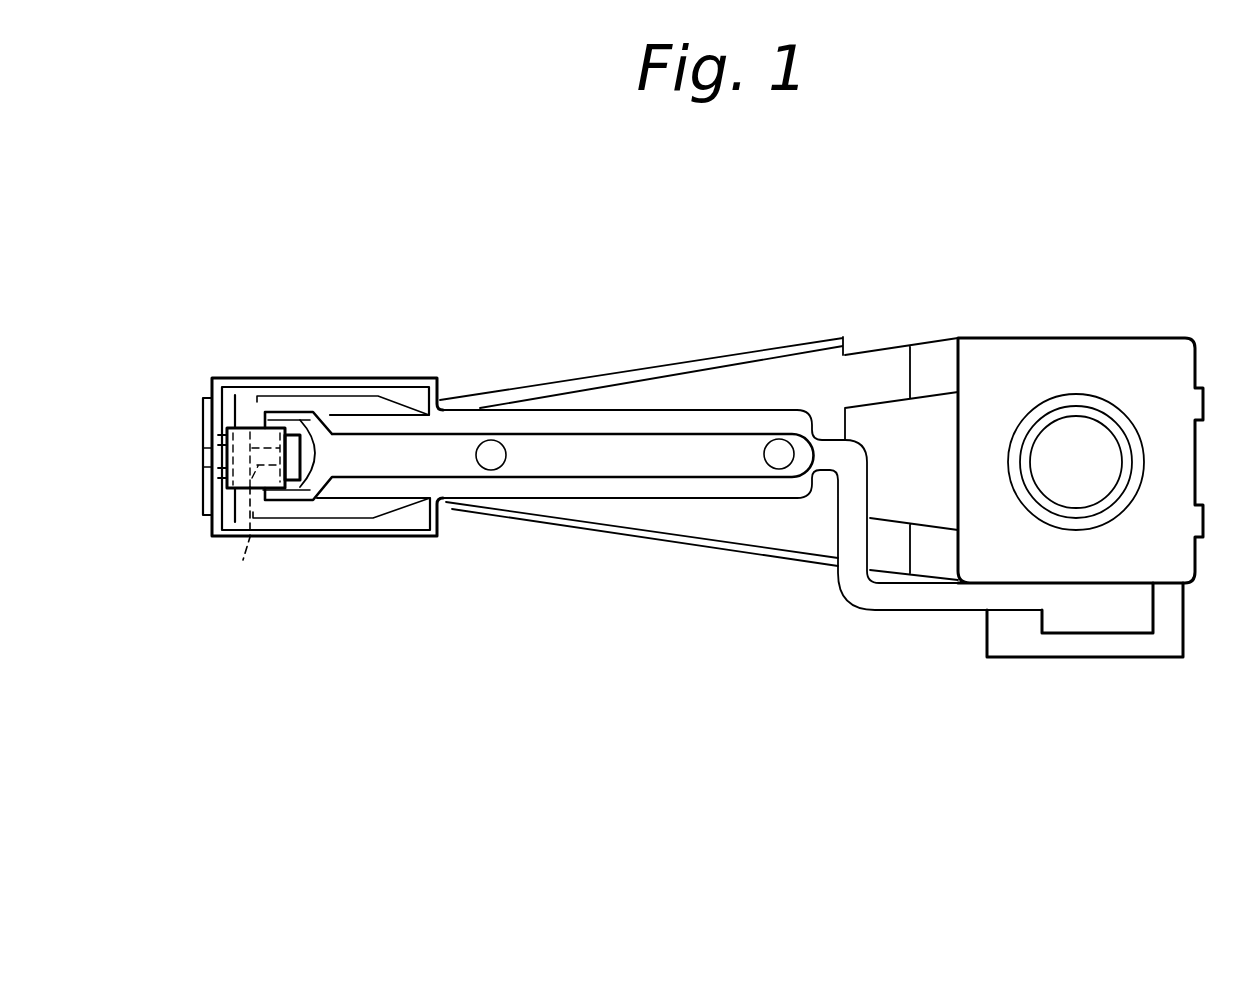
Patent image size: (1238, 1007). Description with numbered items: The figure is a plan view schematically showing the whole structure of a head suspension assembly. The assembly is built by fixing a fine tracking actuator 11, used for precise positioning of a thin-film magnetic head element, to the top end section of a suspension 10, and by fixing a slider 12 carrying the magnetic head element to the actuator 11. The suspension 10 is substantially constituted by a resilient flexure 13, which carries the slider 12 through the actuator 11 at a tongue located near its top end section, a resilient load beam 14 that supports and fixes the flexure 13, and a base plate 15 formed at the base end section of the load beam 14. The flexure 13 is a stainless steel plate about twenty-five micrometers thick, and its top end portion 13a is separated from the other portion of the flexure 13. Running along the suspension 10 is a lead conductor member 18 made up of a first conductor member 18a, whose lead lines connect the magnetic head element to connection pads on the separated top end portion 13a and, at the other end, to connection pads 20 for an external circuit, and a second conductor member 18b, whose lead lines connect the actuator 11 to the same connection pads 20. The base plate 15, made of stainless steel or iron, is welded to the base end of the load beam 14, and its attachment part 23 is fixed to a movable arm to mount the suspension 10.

The suspension 10 is at (797, 314).
The fine tracking actuator 11 is at (243, 560).
The slider 12 is at (258, 428).
The flexure 13 is at (395, 515).
The top end portion of the flexure 13a is at (213, 457).
The load beam 14 is at (692, 520).
The base plate 15 is at (1137, 352).
The lead conductor member 18 is at (697, 490).
The first conductor member 18a is at (330, 377).
The second conductor member 18b is at (375, 424).
The connection pads 20 is at (1090, 615).
The attachment part 23 is at (1078, 425).